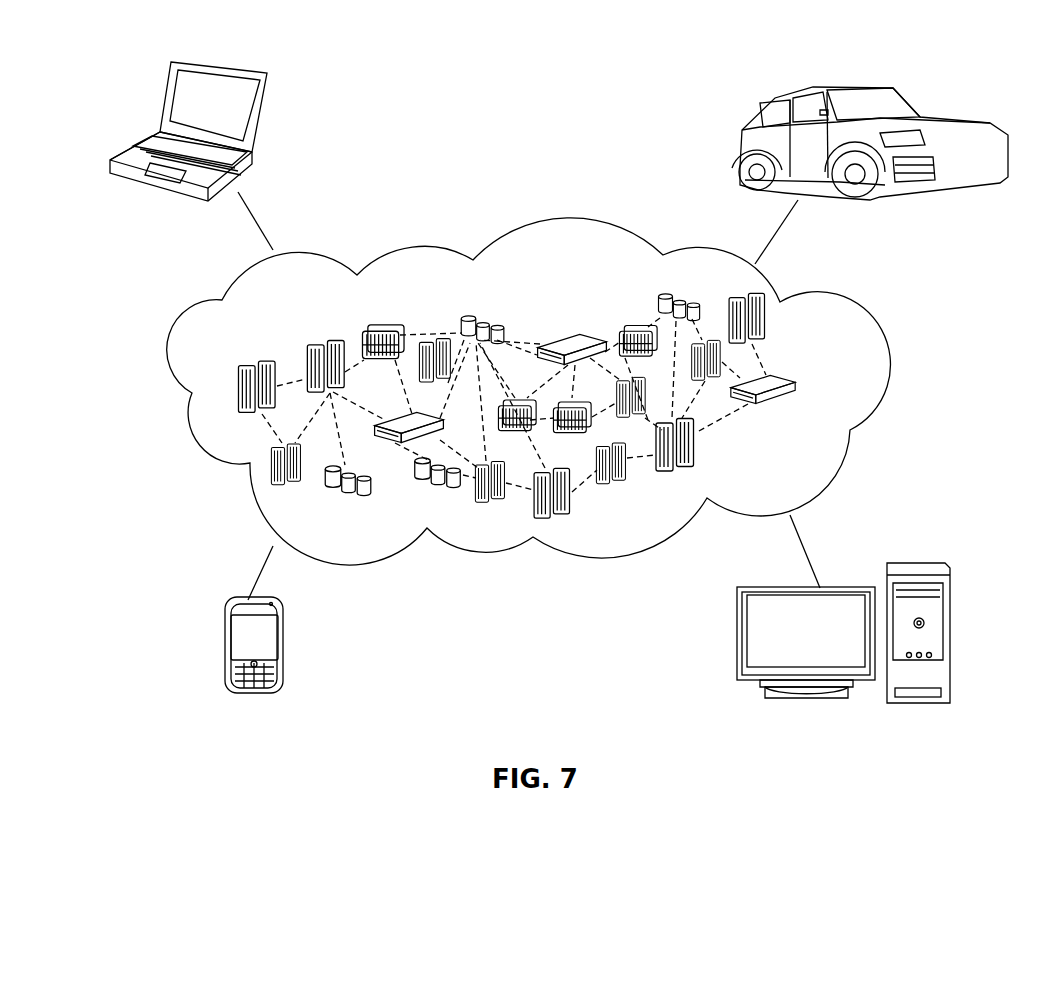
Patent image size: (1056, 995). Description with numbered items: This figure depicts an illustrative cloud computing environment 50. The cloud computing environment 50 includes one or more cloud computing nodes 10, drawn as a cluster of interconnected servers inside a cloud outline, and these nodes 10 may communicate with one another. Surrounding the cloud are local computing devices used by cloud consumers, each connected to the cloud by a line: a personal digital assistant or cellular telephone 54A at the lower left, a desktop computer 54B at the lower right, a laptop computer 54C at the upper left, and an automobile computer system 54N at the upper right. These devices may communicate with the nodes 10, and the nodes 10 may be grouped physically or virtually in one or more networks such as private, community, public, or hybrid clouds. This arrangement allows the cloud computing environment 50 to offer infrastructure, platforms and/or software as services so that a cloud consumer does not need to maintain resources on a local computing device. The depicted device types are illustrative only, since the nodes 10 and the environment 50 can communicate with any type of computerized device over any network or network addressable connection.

The cloud computing nodes 10 is at (832, 385).
The cloud computing environment 50 is at (855, 313).
The personal digital assistant or cellular telephone 54A is at (222, 650).
The desktop computer 54B is at (925, 563).
The laptop computer 54C is at (261, 118).
The automobile computer system 54N is at (745, 130).